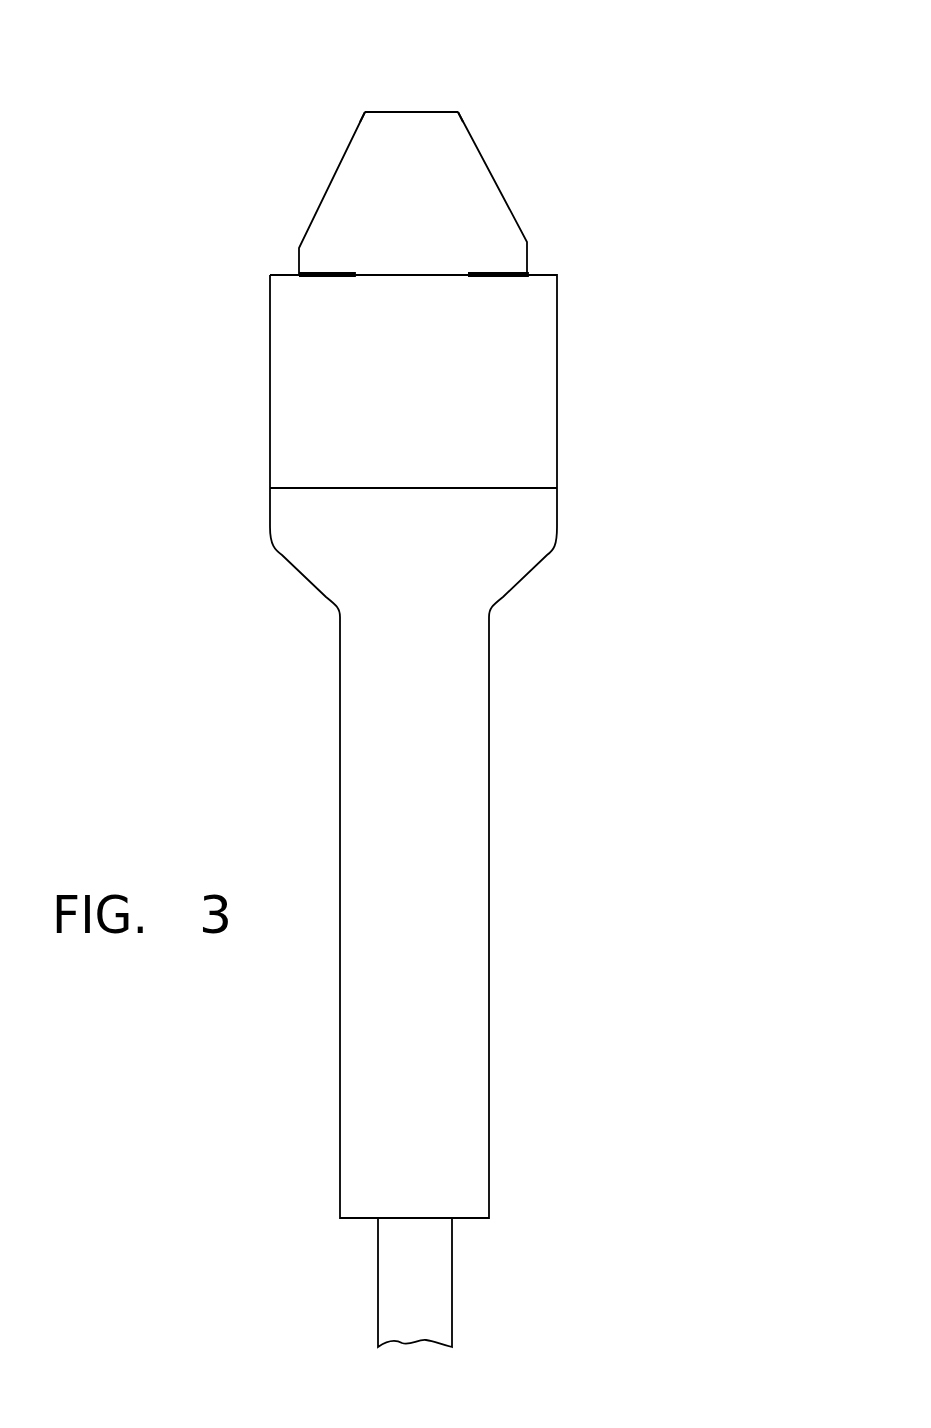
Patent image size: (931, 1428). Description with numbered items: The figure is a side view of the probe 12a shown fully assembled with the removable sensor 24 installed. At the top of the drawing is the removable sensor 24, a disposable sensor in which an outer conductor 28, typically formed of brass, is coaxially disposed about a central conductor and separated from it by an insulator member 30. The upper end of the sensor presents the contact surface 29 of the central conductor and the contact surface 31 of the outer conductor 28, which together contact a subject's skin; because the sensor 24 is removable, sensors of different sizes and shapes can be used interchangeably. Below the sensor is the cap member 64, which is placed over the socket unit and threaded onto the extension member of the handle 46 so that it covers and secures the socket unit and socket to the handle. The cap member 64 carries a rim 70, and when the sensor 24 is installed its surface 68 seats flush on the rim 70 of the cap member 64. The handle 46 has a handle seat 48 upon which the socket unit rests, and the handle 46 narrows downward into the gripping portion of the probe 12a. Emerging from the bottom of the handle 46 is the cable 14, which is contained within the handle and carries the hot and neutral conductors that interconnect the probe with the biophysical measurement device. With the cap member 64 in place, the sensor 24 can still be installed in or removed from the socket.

The probe 12a is at (677, 347).
The cable 14 is at (442, 1288).
The removable sensor 24 is at (492, 172).
The outer conductor 28 is at (336, 173).
The contact surface 29 is at (410, 112).
The insulator member 30 is at (383, 112).
The contact surface 31 is at (447, 112).
The handle 46 is at (548, 803).
The handle seat 48 is at (533, 488).
The cap member 64 is at (557, 347).
The surface 68 is at (322, 276).
The rim 70 is at (540, 275).